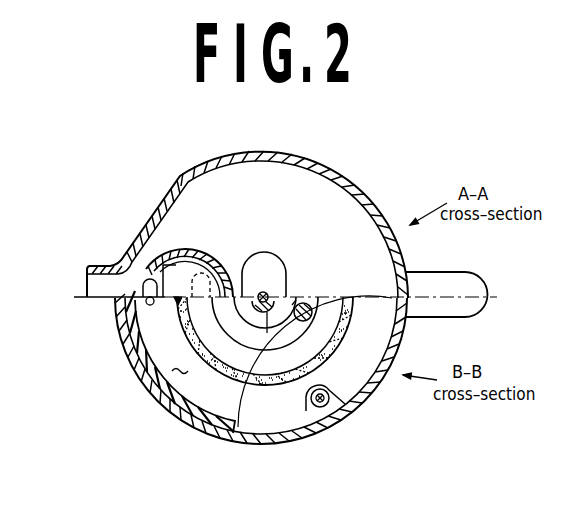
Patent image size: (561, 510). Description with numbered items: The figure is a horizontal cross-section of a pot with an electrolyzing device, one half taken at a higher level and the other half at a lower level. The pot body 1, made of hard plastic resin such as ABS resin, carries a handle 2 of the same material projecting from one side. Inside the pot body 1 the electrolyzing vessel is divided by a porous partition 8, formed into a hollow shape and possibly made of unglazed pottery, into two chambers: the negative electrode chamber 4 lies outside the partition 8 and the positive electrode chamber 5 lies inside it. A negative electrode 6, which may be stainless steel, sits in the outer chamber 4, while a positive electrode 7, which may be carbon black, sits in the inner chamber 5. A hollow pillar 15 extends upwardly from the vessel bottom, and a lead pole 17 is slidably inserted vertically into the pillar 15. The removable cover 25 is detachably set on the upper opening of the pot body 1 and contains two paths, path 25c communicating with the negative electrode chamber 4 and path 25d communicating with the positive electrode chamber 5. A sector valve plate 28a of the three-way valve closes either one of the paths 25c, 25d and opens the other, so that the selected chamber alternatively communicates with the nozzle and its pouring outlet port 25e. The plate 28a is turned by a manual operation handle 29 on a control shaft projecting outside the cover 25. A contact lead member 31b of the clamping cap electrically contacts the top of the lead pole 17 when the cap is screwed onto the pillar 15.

The pot body 1 is at (216, 436).
The handle 2 is at (442, 280).
The negative electrode chamber 4 is at (177, 356).
The positive electrode chamber 5 is at (309, 368).
The negative electrode 6 is at (176, 402).
The positive electrode 7 is at (313, 304).
The porous partition 8 is at (257, 384).
The hollow pillar 15 is at (297, 306).
The lead pole 17 is at (265, 325).
The cover 25 is at (378, 192).
The path 25c is at (143, 291).
The path 25d is at (216, 268).
The pouring outlet port 25e is at (82, 301).
The sector valve plate 28a is at (184, 274).
The manual operation handle 29 is at (178, 296).
The contact lead member 31b is at (264, 292).